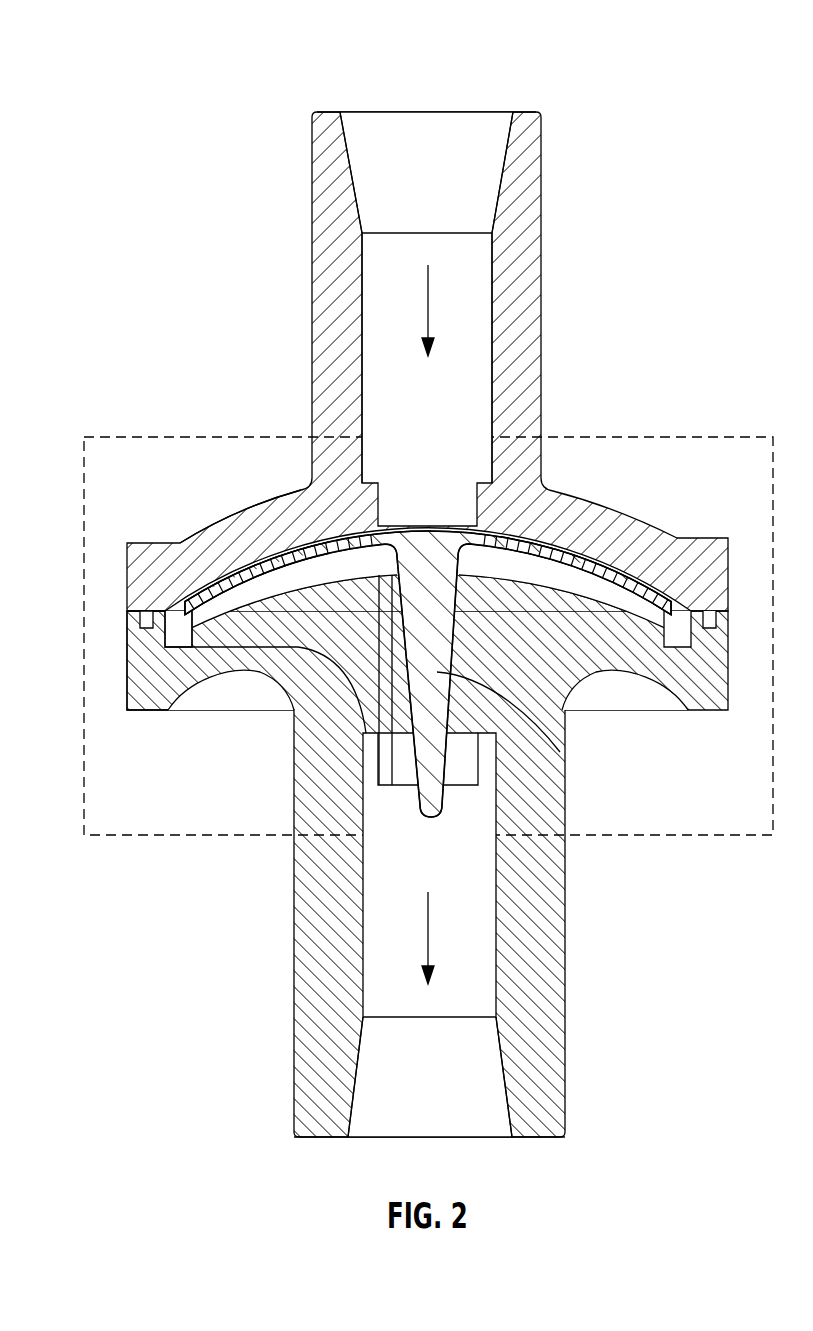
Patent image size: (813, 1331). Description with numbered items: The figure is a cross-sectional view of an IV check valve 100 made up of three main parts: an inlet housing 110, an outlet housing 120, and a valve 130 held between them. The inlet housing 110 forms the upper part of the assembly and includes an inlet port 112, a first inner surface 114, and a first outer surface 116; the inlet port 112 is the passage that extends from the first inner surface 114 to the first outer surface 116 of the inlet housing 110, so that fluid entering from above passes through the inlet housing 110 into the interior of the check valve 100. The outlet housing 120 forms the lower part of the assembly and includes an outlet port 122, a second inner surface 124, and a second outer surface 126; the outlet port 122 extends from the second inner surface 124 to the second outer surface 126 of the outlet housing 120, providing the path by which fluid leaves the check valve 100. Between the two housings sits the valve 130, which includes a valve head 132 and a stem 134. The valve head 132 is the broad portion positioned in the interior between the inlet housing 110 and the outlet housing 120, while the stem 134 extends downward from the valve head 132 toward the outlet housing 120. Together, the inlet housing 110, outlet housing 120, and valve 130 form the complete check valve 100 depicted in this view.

The check valve 100 is at (126, 46).
The inlet housing 110 is at (548, 492).
The inlet port 112 is at (395, 132).
The first inner surface 114 is at (180, 605).
The first outer surface 116 is at (237, 517).
The outlet housing 120 is at (292, 725).
The outlet port 122 is at (378, 1123).
The second inner surface 124 is at (180, 613).
The second outer surface 126 is at (150, 712).
The valve 130 is at (391, 560).
The valve head 132 is at (627, 587).
The stem 134 is at (560, 752).